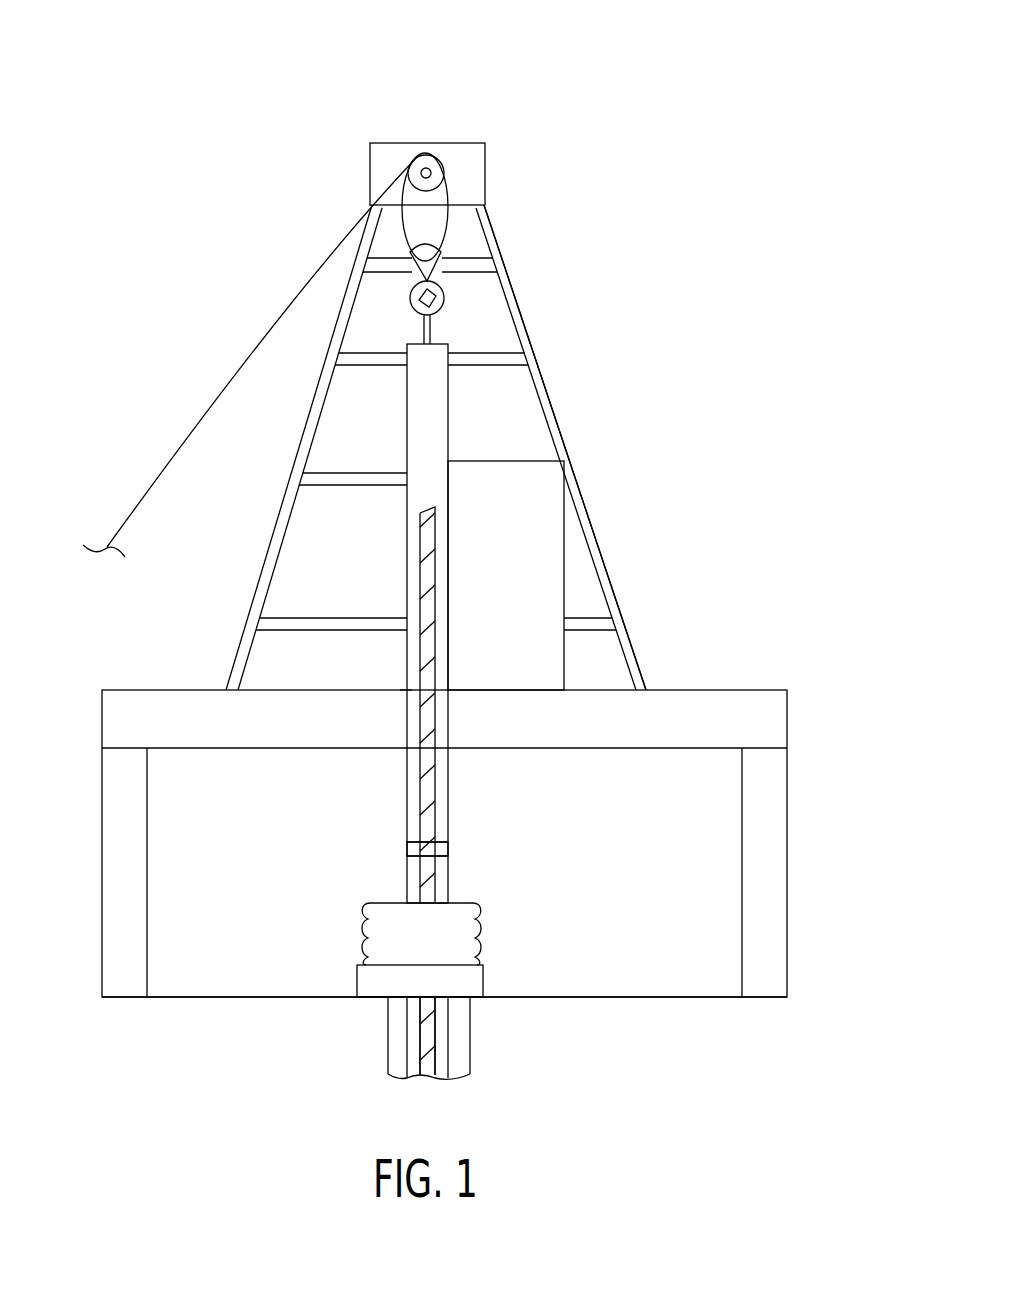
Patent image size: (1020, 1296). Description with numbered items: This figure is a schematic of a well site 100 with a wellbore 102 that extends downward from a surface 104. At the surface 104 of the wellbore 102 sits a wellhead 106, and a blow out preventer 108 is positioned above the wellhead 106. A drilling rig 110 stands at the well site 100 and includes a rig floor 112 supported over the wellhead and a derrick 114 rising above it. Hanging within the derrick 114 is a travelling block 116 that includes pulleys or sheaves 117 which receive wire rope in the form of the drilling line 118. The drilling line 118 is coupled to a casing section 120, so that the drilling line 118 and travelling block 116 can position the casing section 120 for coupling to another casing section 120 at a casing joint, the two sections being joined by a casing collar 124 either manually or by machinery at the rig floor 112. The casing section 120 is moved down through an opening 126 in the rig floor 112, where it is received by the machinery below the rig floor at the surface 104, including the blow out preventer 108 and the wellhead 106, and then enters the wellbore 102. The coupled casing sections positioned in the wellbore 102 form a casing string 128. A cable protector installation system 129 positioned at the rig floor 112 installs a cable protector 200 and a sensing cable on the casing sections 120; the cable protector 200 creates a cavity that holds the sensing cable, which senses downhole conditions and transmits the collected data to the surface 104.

The well site 100 is at (616, 100).
The wellbore 102 is at (470, 1032).
The surface 104 is at (606, 997).
The wellhead 106 is at (485, 967).
The blow out preventer 108 is at (470, 905).
The drilling rig 110 is at (230, 529).
The rig floor 112 is at (690, 690).
The derrick 114 is at (514, 304).
The travelling block 116 is at (430, 254).
The pulleys or sheaves 117 is at (427, 165).
The drilling line 118 is at (249, 334).
The casing section 120 is at (430, 430).
The casing collar 124 is at (410, 850).
The opening 126 is at (405, 690).
The casing string 128 is at (415, 1047).
The cable protector installation system 129 is at (565, 552).
The cable protector 200 is at (436, 665).